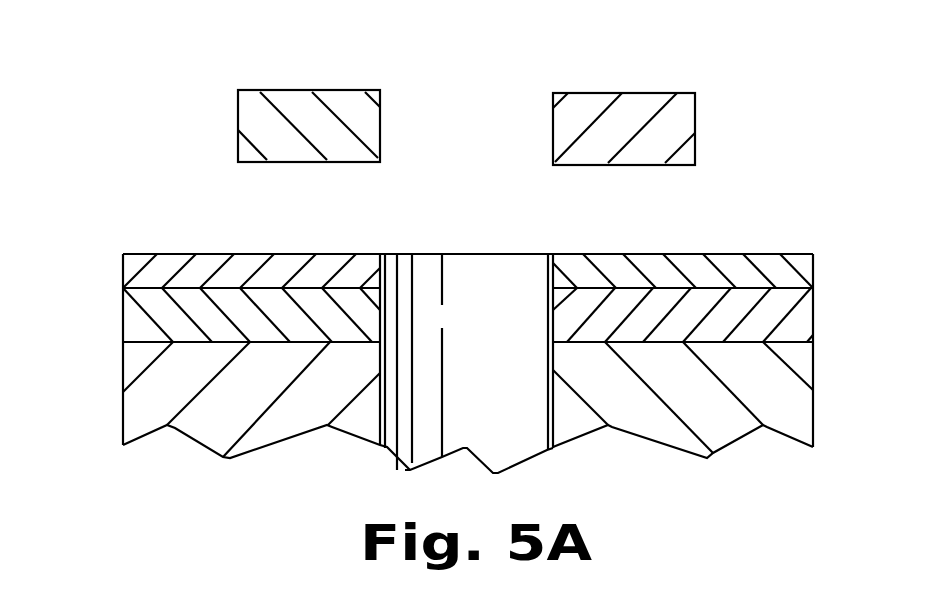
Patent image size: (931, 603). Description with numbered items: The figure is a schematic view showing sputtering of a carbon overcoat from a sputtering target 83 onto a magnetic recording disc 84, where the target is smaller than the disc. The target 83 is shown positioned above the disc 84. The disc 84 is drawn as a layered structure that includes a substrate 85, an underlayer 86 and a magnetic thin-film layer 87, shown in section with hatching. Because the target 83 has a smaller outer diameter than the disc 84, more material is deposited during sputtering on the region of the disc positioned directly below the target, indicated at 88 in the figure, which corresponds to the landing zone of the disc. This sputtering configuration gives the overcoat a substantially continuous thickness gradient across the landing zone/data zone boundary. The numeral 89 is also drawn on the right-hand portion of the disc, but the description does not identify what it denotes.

The target 83 is at (303, 90).
The disc 84 is at (119, 282).
The substrate 85 is at (262, 404).
The underlayer 86 is at (138, 320).
The magnetic thin-film layer 87 is at (167, 270).
The region of the disc positioned directly below the target 88 is at (367, 253).
The right sidewall 89 is at (717, 255).